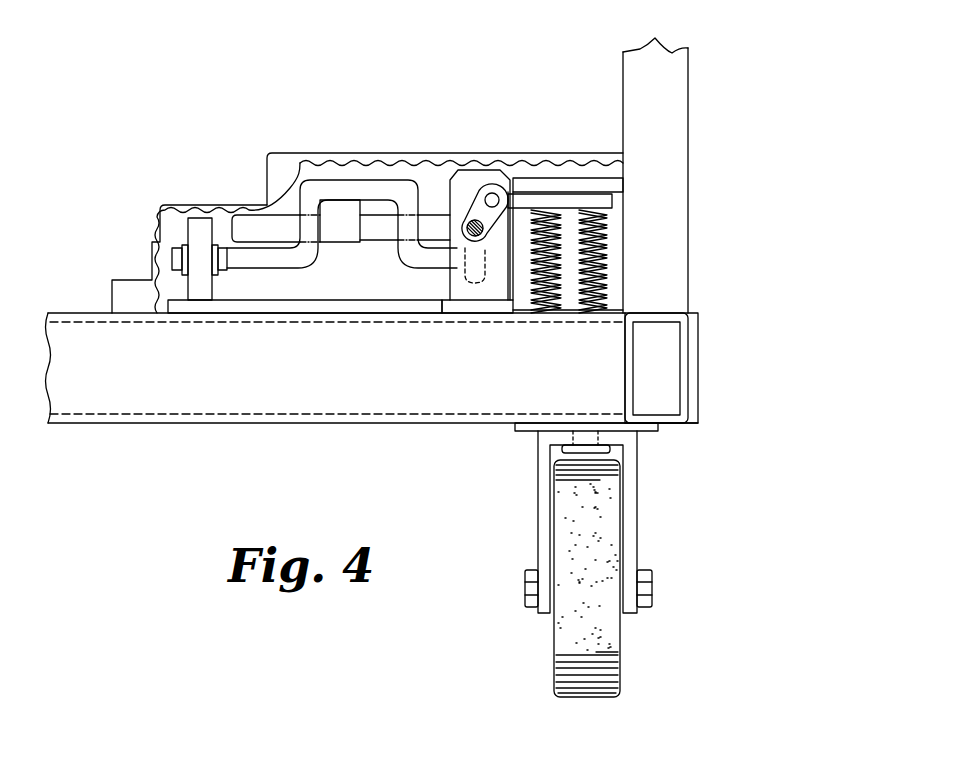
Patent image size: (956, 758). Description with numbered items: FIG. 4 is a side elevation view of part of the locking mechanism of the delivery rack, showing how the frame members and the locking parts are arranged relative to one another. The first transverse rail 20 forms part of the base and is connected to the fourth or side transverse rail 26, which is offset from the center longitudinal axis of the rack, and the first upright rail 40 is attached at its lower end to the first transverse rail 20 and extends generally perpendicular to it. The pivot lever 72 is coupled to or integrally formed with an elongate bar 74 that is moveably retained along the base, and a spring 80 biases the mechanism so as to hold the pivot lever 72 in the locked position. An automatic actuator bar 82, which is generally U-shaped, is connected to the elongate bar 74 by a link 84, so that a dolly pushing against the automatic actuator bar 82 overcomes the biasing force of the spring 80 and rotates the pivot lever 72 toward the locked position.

The first transverse rail 20 is at (688, 350).
The fourth or side transverse rail 26 is at (205, 372).
The first upright rail 40 is at (672, 144).
The pivot lever 72 is at (247, 212).
The elongate bar 74 is at (477, 232).
The spring 80 is at (560, 267).
The automatic actuator bar 82 is at (313, 194).
The link 84 is at (476, 222).